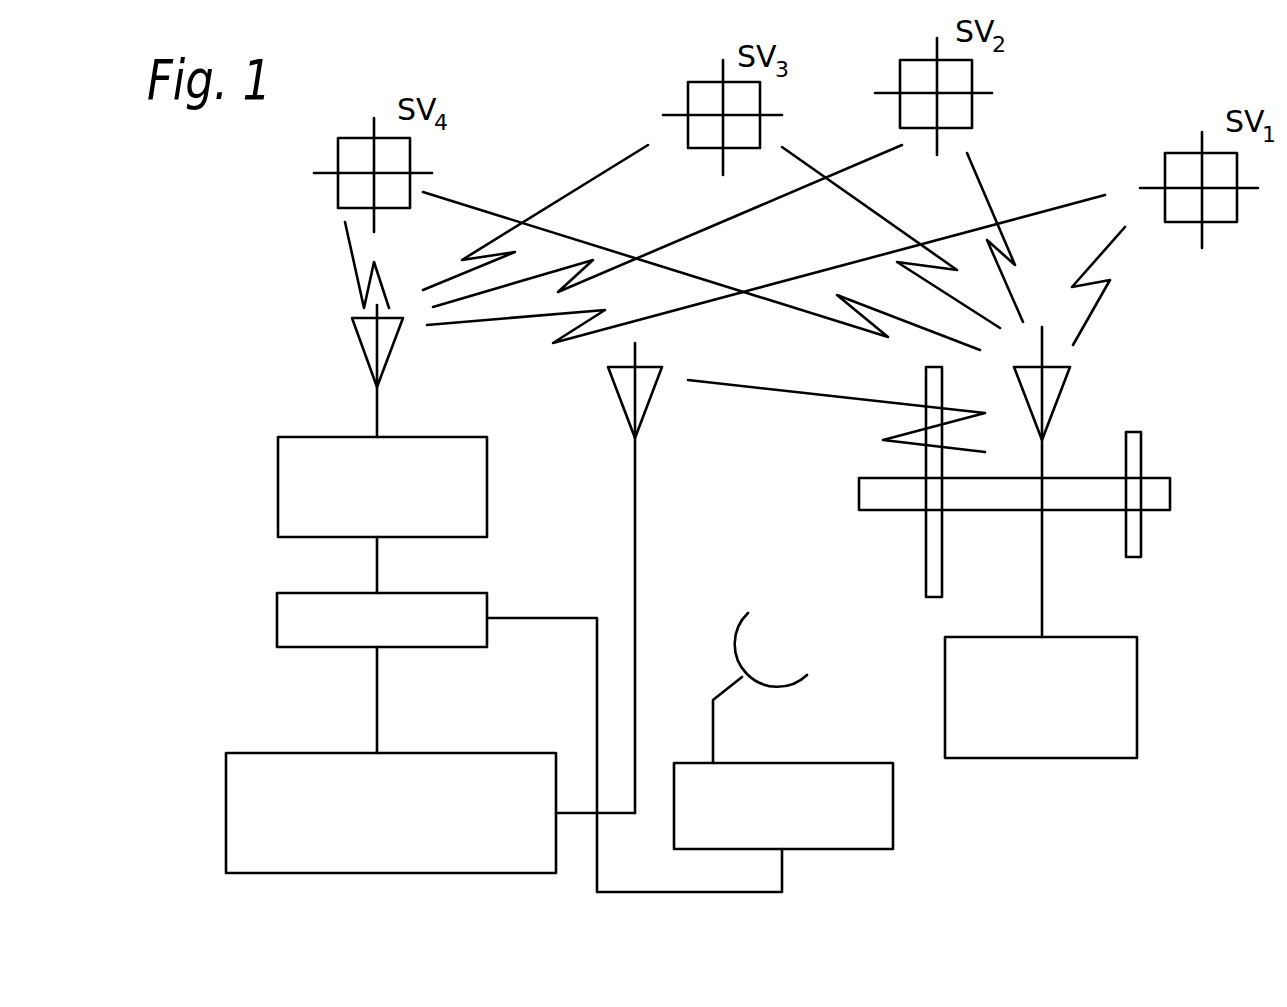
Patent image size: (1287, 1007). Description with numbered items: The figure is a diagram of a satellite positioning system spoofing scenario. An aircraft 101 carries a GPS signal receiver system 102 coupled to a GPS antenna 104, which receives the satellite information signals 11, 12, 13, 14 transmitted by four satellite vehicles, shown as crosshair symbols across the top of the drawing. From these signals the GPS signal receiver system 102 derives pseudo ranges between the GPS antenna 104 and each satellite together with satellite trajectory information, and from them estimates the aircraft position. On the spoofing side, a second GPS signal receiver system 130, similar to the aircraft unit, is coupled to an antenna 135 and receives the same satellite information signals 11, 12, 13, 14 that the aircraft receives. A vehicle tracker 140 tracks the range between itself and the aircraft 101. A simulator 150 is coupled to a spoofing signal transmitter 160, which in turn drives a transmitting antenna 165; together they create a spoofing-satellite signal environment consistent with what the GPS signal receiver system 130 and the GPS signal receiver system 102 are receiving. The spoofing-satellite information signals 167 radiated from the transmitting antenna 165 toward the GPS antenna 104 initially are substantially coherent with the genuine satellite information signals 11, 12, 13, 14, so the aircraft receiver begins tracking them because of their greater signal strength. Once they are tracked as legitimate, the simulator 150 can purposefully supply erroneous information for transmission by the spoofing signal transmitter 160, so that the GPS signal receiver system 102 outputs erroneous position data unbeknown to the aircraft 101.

The satellite information signal 11 is at (1122, 232).
The satellite information signal 12 is at (977, 183).
The satellite information signal 13 is at (727, 218).
The satellite information signal 14 is at (447, 197).
The aircraft 101 is at (1170, 493).
The GPS signal receiver system 102 is at (1137, 672).
The GPS antenna 104 is at (1059, 398).
The GPS signal receiver system 130 is at (278, 492).
The antenna 135 is at (353, 337).
The vehicle tracker 140 is at (808, 763).
The simulator 150 is at (278, 618).
The spoofing signal transmitter 160 is at (226, 807).
The transmitting antenna 165 is at (613, 386).
The spoofing-satellite information signals 167 is at (771, 392).